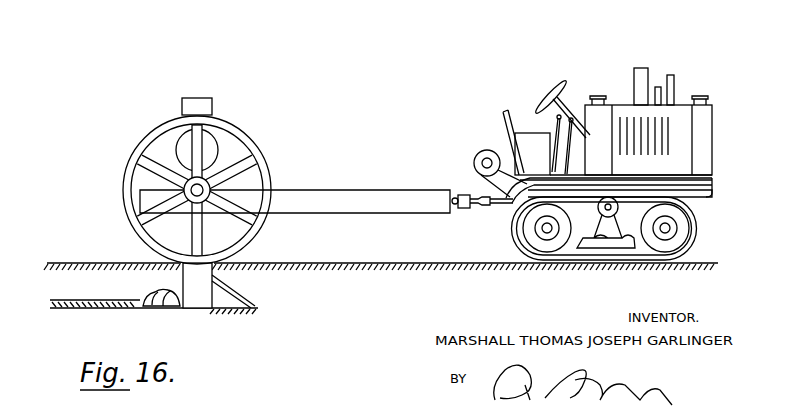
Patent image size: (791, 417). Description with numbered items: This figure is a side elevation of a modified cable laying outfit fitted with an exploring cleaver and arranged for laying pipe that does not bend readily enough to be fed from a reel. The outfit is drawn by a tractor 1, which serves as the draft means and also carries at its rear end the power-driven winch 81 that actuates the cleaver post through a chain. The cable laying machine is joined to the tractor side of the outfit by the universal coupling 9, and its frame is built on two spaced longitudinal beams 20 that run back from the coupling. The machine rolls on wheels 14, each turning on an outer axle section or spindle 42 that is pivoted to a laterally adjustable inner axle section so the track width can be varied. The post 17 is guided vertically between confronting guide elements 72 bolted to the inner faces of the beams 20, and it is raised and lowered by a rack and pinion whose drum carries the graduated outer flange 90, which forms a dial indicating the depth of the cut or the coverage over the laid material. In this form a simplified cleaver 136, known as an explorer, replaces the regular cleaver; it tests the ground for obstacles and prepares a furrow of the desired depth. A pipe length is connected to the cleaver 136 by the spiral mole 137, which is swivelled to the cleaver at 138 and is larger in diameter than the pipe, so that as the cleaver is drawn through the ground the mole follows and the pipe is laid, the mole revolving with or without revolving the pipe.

The tractor 1 is at (527, 97).
The universal coupling 9 is at (461, 208).
The wheels 14 is at (259, 142).
The supporting post 17 is at (204, 101).
The longitudinal beams 20 is at (355, 210).
The outer axle section or spindle 42 is at (207, 190).
The guide element 72 is at (178, 158).
The power-driven winch 81 is at (482, 152).
The outer flange 90 is at (212, 135).
The simplified cleaver 136 is at (246, 299).
The spiral mole 137 is at (166, 310).
The swivel 138 is at (180, 310).